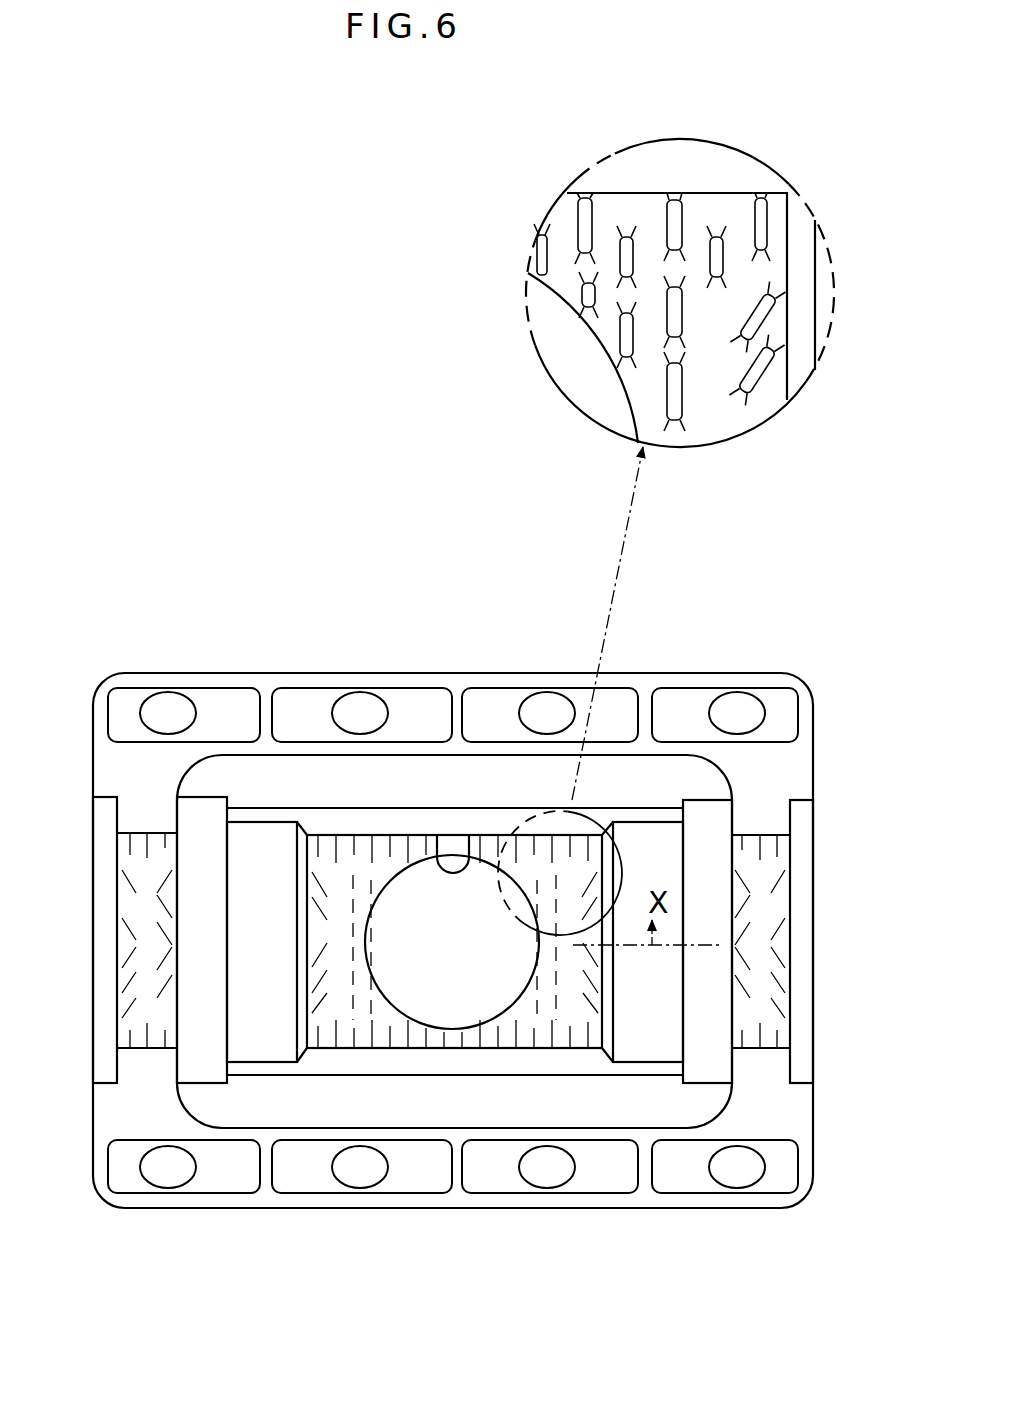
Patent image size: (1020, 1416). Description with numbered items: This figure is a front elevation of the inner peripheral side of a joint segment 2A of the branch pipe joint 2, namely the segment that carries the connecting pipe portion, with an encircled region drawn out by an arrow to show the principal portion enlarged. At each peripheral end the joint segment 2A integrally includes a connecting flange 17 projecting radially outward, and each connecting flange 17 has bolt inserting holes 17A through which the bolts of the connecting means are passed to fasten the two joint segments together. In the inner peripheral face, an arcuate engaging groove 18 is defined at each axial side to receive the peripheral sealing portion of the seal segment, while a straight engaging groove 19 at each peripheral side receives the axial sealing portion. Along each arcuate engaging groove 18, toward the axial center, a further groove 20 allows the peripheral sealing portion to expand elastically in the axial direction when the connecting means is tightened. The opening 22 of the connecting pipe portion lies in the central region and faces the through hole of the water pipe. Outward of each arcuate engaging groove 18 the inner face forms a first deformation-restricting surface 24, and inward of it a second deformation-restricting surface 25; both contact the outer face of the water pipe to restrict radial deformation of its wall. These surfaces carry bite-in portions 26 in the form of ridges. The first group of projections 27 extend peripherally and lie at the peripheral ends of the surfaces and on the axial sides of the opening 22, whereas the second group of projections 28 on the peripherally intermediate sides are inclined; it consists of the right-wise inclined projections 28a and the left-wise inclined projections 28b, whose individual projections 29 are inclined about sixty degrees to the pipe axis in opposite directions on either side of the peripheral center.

The branch pipe joint 2 is at (458, 914).
The joint segment 2A is at (767, 675).
The connecting flange 17 is at (398, 673).
The bolt inserting hole 17A is at (165, 703).
The arcuate engaging groove 18 is at (202, 810).
The straight engaging groove 19 is at (545, 773).
The further groove 20 is at (262, 838).
The opening 22 is at (460, 843).
The first deformation-restricting surface 24 is at (140, 830).
The second deformation-restricting surface 25 is at (463, 833).
The bite-in portion 26 is at (130, 828).
The first group of projections 27 is at (533, 245).
The second group of projections 28 is at (246, 951).
The group of right-wise inclined projections 28a is at (310, 925).
The group of left-wise inclined projections 28b is at (310, 955).
The projection 29 is at (667, 218).